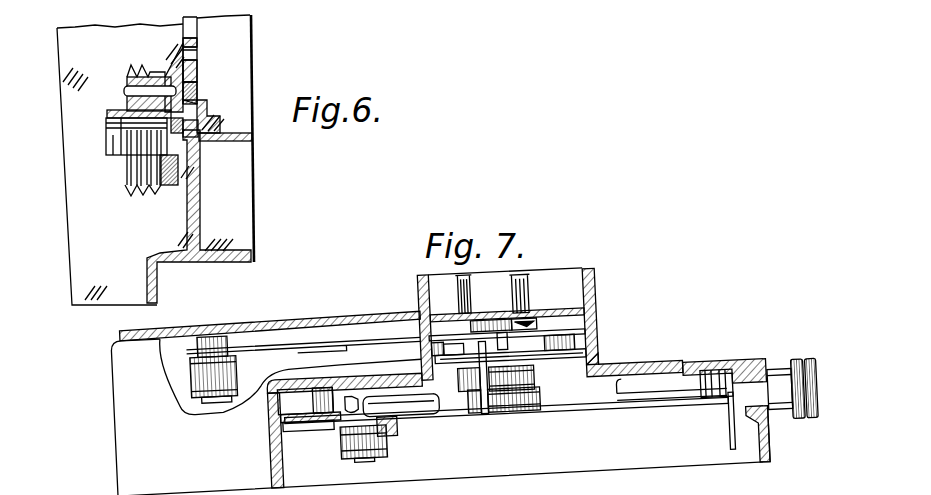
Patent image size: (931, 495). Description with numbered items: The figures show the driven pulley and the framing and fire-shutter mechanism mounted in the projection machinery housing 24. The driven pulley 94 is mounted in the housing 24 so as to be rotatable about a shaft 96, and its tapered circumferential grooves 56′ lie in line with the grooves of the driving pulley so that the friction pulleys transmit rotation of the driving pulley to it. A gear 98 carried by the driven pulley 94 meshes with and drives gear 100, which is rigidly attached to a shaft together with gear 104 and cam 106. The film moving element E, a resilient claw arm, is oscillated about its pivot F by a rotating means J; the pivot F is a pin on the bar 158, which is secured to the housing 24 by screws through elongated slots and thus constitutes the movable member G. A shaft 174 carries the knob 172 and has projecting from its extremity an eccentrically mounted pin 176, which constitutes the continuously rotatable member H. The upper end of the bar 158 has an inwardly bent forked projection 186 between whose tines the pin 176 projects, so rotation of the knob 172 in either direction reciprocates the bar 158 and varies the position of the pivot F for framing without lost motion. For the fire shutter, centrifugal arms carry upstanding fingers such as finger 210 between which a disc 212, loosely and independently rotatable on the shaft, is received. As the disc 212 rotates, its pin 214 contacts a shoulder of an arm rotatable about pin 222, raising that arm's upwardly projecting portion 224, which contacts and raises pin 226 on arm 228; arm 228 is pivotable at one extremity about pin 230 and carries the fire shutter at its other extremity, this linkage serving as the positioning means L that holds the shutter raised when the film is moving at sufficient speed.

In FIG. 6, the housing 24 is at (189, 27).
In FIG. 7, the housing 24 is at (734, 379).
In FIG. 6, the driven pulley 94 is at (127, 100).
In FIG. 6, the shaft 96 is at (108, 129).
In FIG. 6, the tapered circumferential grooves 56′ is at (151, 193).
In FIG. 6, the gear 98 is at (200, 207).
In FIG. 7, the positioning means L is at (293, 331).
In FIG. 7, the upwardly projecting portion 224 is at (478, 314).
In FIG. 7, the pin 214 is at (550, 316).
In FIG. 7, the upstanding finger 210 is at (600, 332).
In FIG. 7, the disc 212 is at (600, 350).
In FIG. 7, the gear 100 is at (601, 364).
In FIG. 7, the knob 172 is at (802, 375).
In FIG. 7, the gear 104 is at (531, 380).
In FIG. 7, the cam 106 is at (533, 415).
In FIG. 7, the pin 226 is at (483, 416).
In FIG. 7, the rotating means J is at (558, 407).
In FIG. 7, the film moving element E is at (610, 394).
In FIG. 7, the arm 228 is at (591, 410).
In FIG. 7, the pin 176 is at (390, 381).
In FIG. 7, the continuously rotatable member H is at (358, 388).
In FIG. 7, the shaft 174 is at (429, 414).
In FIG. 7, the pin 230 is at (383, 434).
In FIG. 7, the forked projection 186 is at (350, 451).
In FIG. 7, the movable member G is at (321, 431).
In FIG. 7, the pivot F is at (306, 434).
In FIG. 7, the bar 158 is at (308, 405).
In FIG. 7, the pin 222 is at (216, 392).